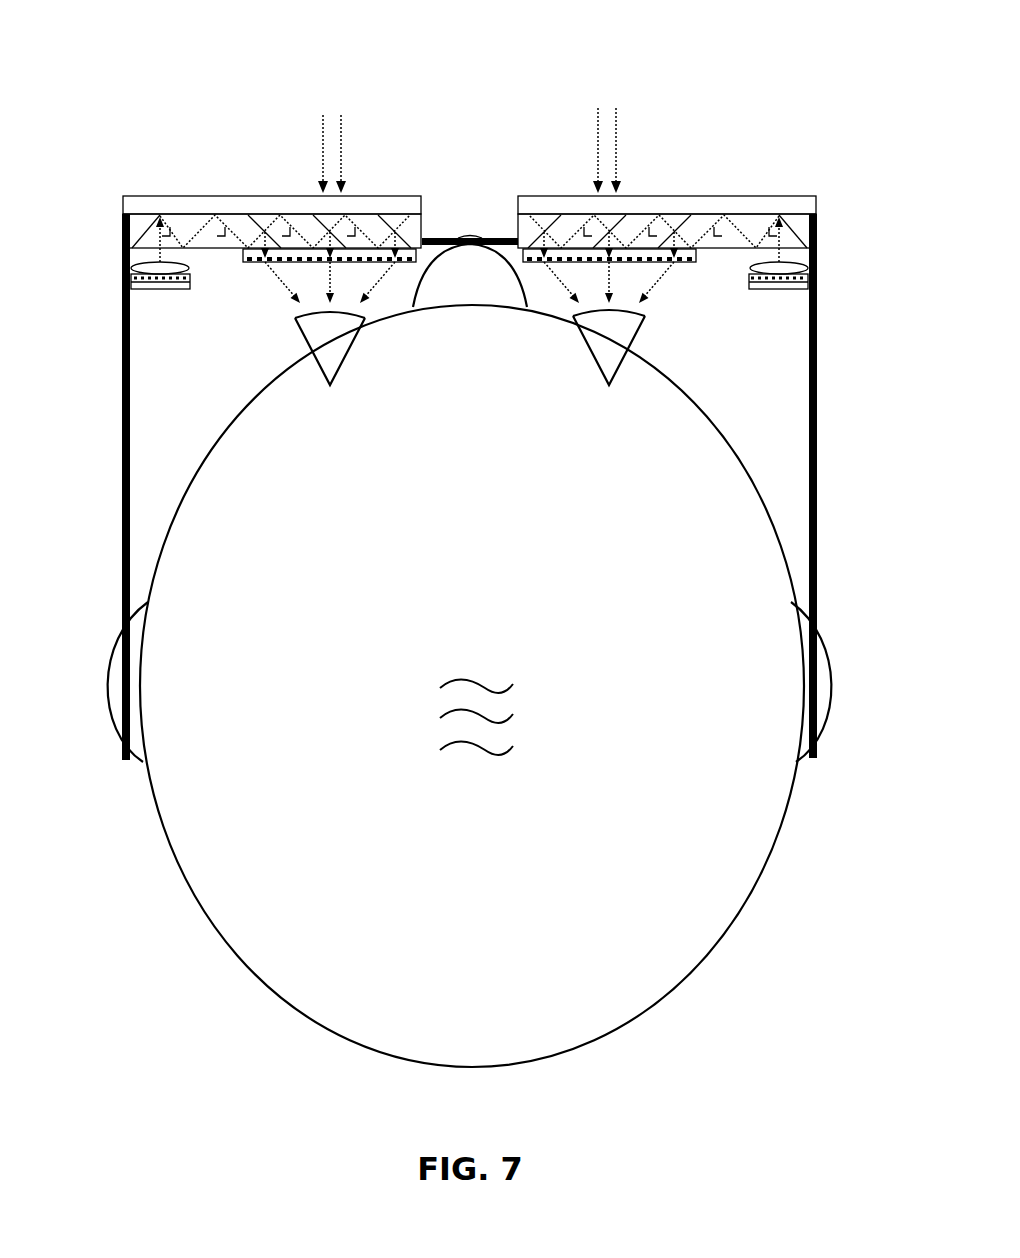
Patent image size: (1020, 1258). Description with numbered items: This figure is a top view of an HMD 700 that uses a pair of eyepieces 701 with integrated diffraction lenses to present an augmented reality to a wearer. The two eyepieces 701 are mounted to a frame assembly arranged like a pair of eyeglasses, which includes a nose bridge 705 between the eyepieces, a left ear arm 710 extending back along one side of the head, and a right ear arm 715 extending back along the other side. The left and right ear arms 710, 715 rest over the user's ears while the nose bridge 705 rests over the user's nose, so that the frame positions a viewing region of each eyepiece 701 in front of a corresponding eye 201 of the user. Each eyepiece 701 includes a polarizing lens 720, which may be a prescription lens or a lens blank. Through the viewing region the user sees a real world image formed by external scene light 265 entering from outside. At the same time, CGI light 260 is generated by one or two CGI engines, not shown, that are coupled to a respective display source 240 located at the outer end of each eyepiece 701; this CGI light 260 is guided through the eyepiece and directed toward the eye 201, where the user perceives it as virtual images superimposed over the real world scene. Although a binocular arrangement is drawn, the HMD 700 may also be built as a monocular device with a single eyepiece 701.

The HMD 700 is at (468, 381).
The eyepiece 701 is at (471, 170).
The nose bridge 705 is at (500, 237).
The left ear arm 710 is at (121, 487).
The right ear arm 715 is at (818, 487).
The polarizing lens 720 is at (238, 196).
The display source 240 is at (102, 295).
The CGI light 260 is at (287, 293).
The external scene light 265 is at (322, 137).
The eye 201 is at (344, 347).